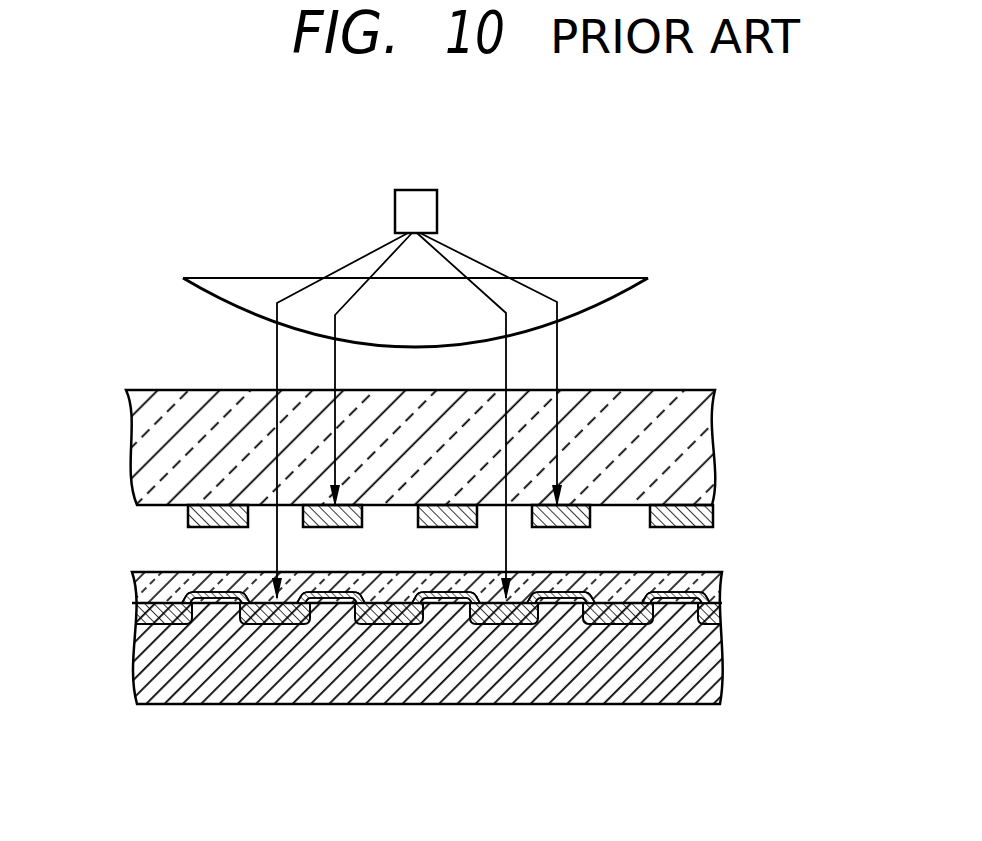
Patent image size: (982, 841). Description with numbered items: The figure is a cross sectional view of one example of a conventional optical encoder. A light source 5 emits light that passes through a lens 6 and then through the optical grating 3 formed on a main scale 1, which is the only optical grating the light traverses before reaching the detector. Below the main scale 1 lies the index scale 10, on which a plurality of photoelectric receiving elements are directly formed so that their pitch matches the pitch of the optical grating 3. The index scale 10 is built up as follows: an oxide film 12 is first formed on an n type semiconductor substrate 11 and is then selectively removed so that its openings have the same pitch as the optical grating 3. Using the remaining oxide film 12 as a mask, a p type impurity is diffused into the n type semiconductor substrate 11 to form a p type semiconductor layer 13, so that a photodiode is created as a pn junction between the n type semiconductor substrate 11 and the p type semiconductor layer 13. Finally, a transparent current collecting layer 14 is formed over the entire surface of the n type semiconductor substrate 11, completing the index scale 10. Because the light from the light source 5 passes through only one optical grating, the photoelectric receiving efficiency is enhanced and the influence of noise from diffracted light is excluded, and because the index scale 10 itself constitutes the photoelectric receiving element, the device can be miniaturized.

The main scale 1 is at (713, 415).
The optical grating 3 is at (688, 528).
The light source 5 is at (395, 210).
The lens 6 is at (597, 311).
The index scale 10 is at (447, 648).
The n type semiconductor substrate 11 is at (621, 705).
The oxide film 12 is at (182, 594).
The p type semiconductor layer 13 is at (278, 624).
The transparent current collecting layer 14 is at (175, 572).